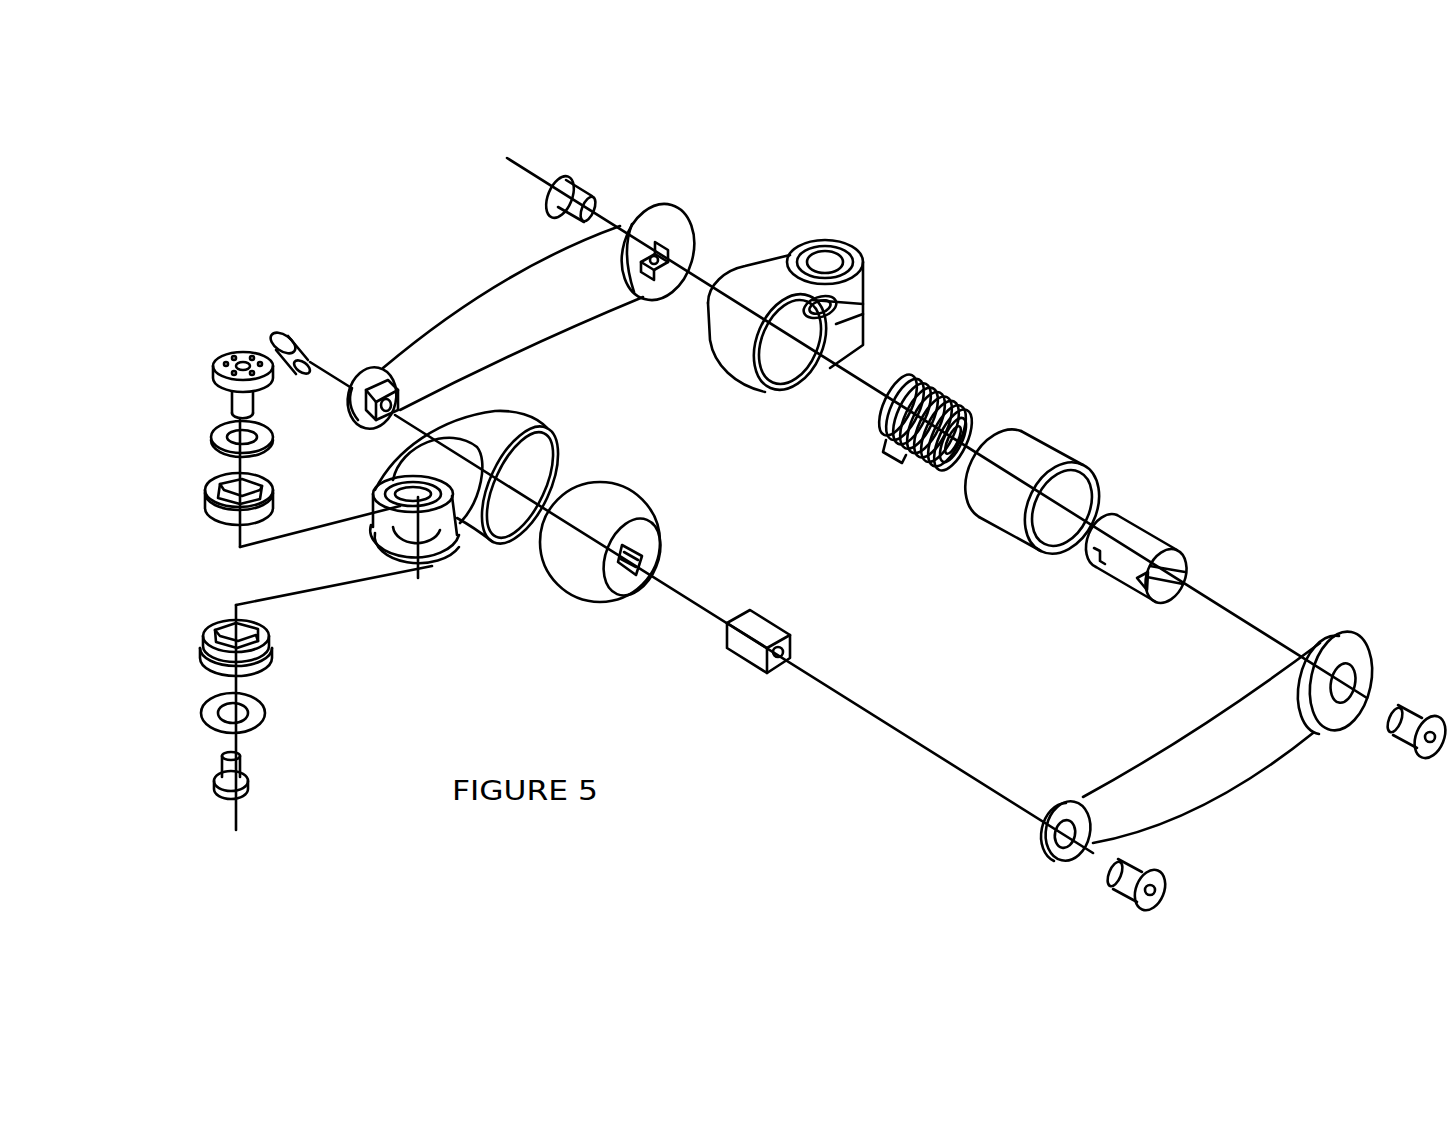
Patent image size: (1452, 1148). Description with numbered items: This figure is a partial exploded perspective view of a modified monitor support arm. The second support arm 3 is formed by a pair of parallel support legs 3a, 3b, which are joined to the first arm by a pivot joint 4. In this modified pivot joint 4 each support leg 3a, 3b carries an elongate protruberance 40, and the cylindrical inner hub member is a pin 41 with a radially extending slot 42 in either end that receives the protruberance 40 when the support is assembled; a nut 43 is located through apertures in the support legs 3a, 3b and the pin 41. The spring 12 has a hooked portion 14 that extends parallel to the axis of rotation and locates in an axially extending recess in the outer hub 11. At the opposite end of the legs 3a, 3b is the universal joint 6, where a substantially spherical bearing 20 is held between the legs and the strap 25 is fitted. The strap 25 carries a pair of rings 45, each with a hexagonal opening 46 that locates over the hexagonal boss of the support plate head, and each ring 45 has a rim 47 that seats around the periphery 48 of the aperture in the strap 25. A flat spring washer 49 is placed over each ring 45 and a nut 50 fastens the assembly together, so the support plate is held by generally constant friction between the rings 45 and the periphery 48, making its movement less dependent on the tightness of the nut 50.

The second support arm 3 is at (444, 282).
The support leg 3a is at (1242, 764).
The support leg 3b is at (446, 337).
The pivot joint 4 is at (1075, 344).
The universal joint 6 is at (532, 618).
The outer hub 11 is at (1040, 456).
The spring 12 is at (948, 386).
The hooked portion 14 is at (905, 458).
The spherical bearing 20 is at (598, 598).
The strap 25 is at (512, 437).
The elongate protruberance 40 is at (652, 276).
The pin 41 is at (1140, 540).
The radially extending slot 42 is at (1092, 556).
The nut 43 is at (584, 198).
The ring 45 is at (205, 496).
The hexagonal opening 46 is at (215, 496).
The rim 47 is at (207, 636).
The periphery 48 is at (392, 487).
The flat spring washer 49 is at (222, 438).
The nut 50 is at (226, 354).